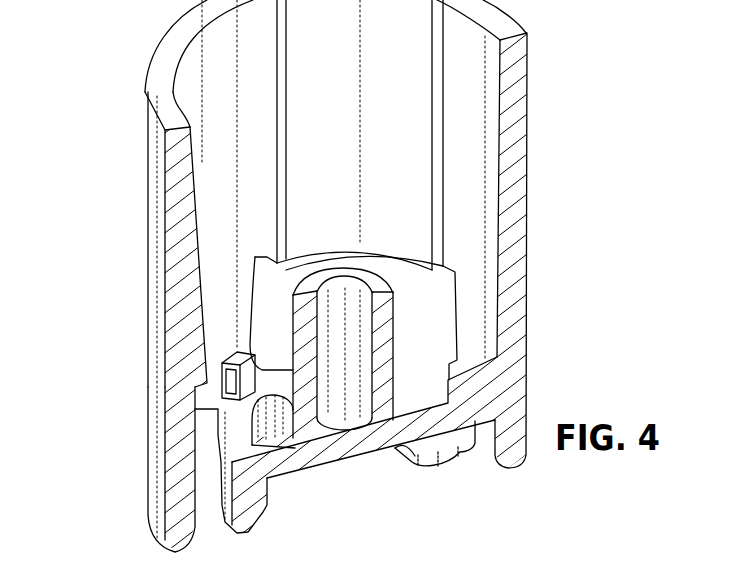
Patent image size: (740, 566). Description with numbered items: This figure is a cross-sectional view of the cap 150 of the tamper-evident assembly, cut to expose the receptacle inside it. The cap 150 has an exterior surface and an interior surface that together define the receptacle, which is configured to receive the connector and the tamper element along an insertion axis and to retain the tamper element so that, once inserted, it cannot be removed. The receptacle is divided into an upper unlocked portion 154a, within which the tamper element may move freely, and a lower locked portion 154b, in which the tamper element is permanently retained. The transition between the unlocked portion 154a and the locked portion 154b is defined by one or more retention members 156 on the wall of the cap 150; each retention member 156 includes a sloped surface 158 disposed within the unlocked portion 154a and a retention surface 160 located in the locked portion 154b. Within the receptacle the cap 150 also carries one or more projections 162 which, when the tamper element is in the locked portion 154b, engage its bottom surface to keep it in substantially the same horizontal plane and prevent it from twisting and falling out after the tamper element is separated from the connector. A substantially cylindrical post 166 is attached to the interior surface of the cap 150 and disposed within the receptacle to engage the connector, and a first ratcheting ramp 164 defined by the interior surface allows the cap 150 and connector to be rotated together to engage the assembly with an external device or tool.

The cap 150 is at (527, 100).
The unlocked portion 154a is at (72, 140).
The locked portion 154b is at (73, 398).
The retention member 156 is at (193, 330).
The sloped surface 158 is at (200, 233).
The retention surface 160 is at (227, 380).
The projection 162 is at (205, 385).
The first ratcheting ramp 164 is at (273, 430).
The post 166 is at (307, 381).